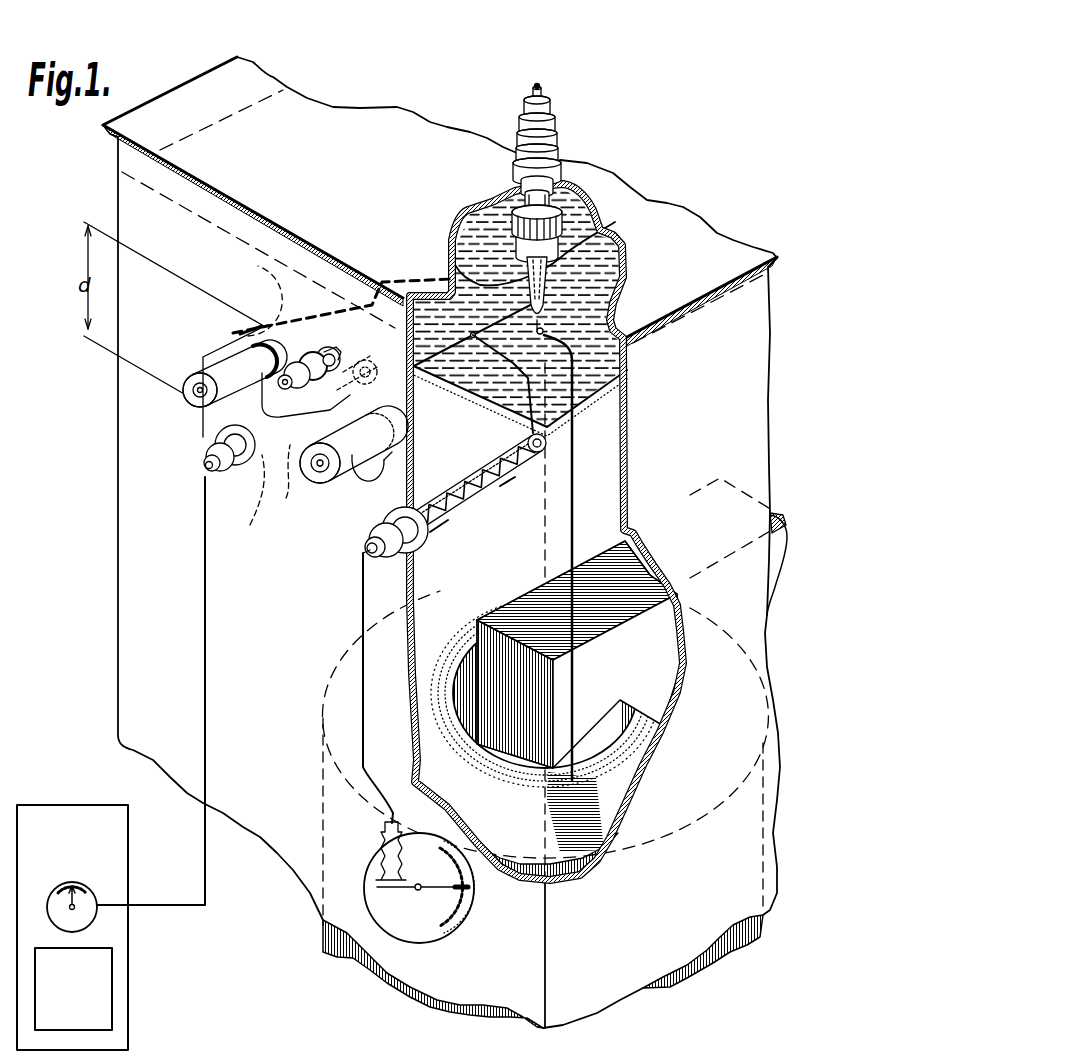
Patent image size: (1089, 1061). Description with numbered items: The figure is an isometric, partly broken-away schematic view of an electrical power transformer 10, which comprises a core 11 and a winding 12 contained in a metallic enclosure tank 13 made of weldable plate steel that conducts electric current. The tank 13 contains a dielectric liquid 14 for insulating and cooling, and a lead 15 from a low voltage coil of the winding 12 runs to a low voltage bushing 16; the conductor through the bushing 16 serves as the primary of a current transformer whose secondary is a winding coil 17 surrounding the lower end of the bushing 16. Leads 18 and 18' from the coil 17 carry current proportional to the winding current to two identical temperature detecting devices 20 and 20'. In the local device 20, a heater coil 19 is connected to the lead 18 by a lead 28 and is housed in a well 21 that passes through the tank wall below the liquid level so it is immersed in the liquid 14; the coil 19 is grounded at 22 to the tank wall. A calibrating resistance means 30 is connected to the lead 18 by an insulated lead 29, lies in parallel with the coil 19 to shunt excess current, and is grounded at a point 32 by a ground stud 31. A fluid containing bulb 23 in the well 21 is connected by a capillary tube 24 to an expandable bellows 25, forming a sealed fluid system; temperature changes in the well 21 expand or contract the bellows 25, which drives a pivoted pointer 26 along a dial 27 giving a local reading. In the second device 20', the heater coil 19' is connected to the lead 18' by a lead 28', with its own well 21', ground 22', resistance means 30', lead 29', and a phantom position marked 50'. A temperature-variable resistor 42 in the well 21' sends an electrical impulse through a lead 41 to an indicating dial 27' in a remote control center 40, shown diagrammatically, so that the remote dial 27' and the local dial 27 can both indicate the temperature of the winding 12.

The electrical power transformer 10 is at (720, 977).
The core 11 is at (614, 672).
The winding 12 is at (512, 820).
The metallic enclosure tank 13 is at (288, 142).
The dielectric liquid 14 is at (627, 405).
The lead 15 is at (575, 510).
The low voltage bushing 16 is at (556, 118).
The winding coil 17 is at (600, 228).
The lead 18 is at (517, 308).
The lead 18' is at (509, 253).
The heater coil 19 is at (477, 481).
The heater coil 19' is at (374, 365).
The temperature detecting device 20 is at (347, 521).
The temperature detecting device 20' is at (164, 387).
The well 21 is at (499, 384).
The well 21' is at (290, 480).
The ground 22 is at (383, 524).
The ground 22' is at (206, 448).
The fluid containing bulb 23 is at (505, 480).
The capillary tube 24 is at (360, 640).
The expandable bellows 25 is at (375, 855).
The pivoted pointer 26 is at (470, 905).
The dial 27 is at (419, 888).
The indicating dial 27' is at (119, 920).
The lead 28 is at (520, 421).
The lead 28' is at (342, 279).
The lead 29 is at (476, 355).
The lead 29' is at (246, 295).
The calibrating resistance means 30 is at (374, 444).
The calibrating resistance means 30' is at (260, 364).
The ground stud 31 is at (304, 358).
The point 32 is at (322, 342).
The control center 40 is at (70, 803).
The lead 41 is at (198, 620).
The resistor 42 is at (255, 490).
The contact position 50' is at (261, 309).